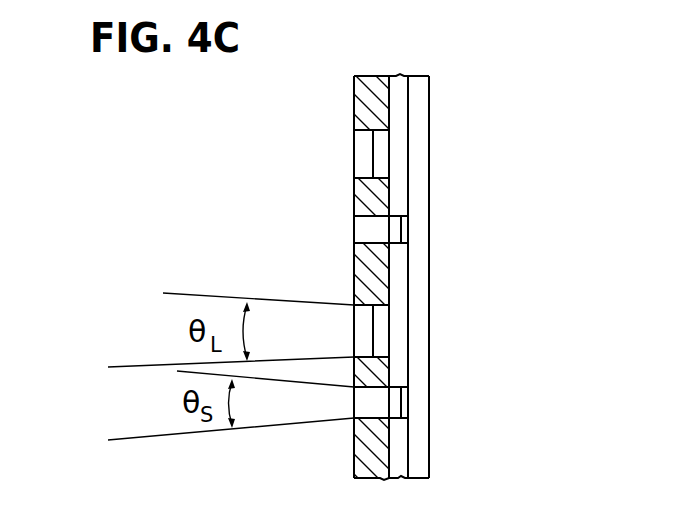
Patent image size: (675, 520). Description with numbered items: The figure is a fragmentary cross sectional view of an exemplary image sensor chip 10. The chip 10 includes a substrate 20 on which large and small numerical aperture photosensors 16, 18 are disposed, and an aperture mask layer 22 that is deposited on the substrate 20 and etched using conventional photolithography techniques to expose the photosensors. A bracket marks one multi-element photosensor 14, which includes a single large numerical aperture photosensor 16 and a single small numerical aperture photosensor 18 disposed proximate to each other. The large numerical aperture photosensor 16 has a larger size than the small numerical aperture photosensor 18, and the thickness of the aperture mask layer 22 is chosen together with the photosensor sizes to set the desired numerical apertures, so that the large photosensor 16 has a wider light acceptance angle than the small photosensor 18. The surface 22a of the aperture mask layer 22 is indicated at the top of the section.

The photosensitive chip 10 is at (477, 253).
The multi-element photosensor 14 is at (337, 247).
The large numerical aperture photosensor 16 is at (382, 150).
The small numerical aperture photosensor 18 is at (406, 233).
The substrate 20 is at (429, 445).
The aperture mask layer 22 is at (360, 445).
The surface of light blocking layer 22a is at (362, 96).